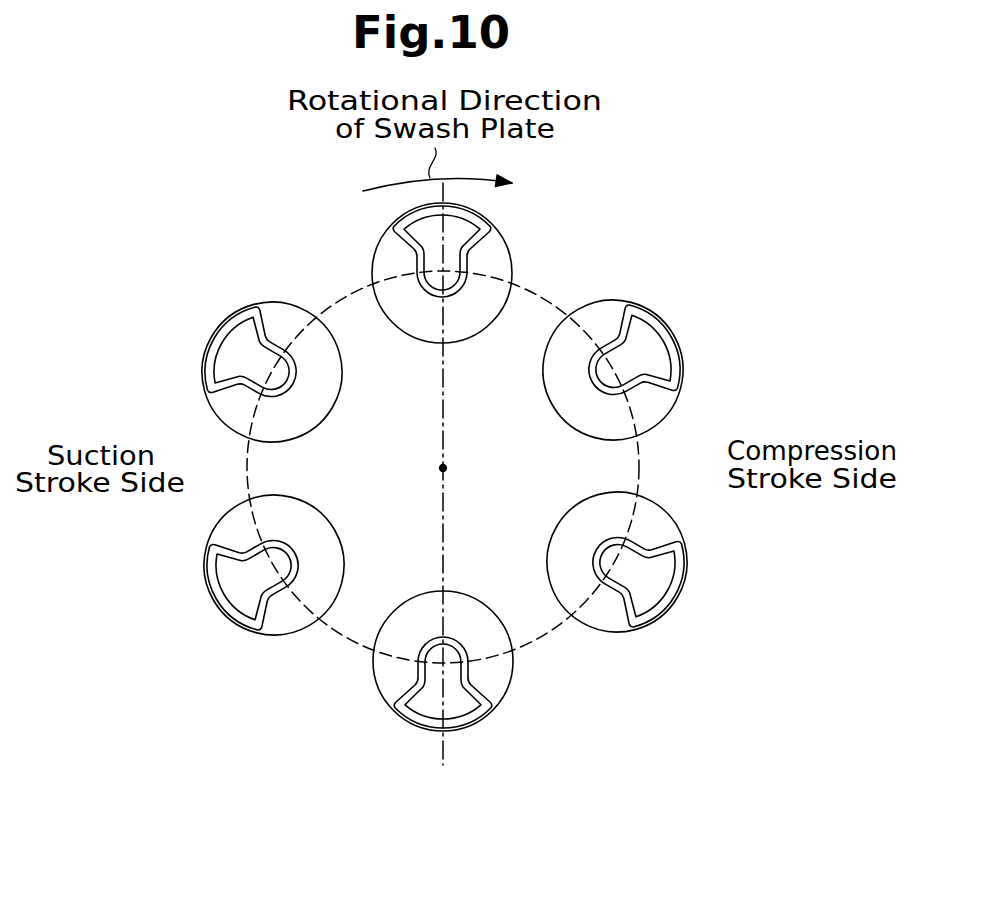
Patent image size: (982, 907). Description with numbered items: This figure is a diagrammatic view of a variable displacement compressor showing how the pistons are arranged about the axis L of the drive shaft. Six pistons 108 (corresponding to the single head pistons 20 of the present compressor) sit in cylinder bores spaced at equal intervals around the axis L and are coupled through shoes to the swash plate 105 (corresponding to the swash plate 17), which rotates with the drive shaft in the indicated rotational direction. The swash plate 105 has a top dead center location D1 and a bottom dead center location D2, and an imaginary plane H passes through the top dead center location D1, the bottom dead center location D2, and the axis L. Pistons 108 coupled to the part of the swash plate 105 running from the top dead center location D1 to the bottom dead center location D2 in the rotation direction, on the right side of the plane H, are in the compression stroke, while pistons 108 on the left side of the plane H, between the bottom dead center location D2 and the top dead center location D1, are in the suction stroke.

The piston 108 is at (439, 463).
The single head piston 20 is at (504, 236).
The swash plate 105 is at (535, 467).
The swash plate 17 is at (642, 464).
The top dead center location D1 is at (420, 188).
The bottom dead center location D2 is at (443, 748).
The imaginary plane H is at (443, 411).
The axis L is at (446, 468).